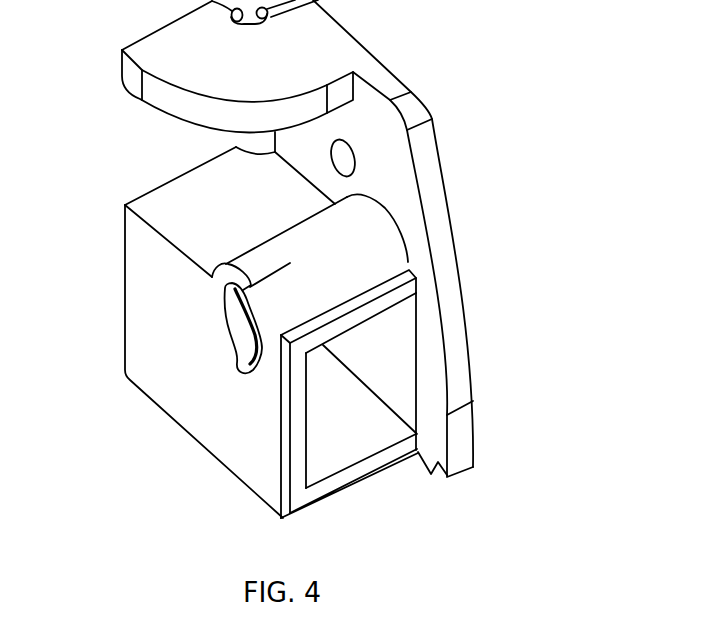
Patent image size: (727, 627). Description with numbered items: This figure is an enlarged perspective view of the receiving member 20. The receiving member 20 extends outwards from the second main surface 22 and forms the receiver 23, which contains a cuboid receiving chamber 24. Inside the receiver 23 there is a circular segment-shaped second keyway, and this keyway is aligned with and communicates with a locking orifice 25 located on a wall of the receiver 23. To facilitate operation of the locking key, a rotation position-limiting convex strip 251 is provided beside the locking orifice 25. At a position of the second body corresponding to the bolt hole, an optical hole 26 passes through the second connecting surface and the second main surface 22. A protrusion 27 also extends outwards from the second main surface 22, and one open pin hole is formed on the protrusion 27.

The receiving member 20 is at (506, 99).
The second main surface 22 is at (427, 372).
The receiver 23 is at (168, 374).
The cuboid receiving chamber 24 is at (343, 425).
The locking orifice 25 is at (233, 318).
The rotation position-limiting convex strip 251 is at (260, 318).
The optical hole 26 is at (338, 155).
The protrusion 27 is at (220, 73).